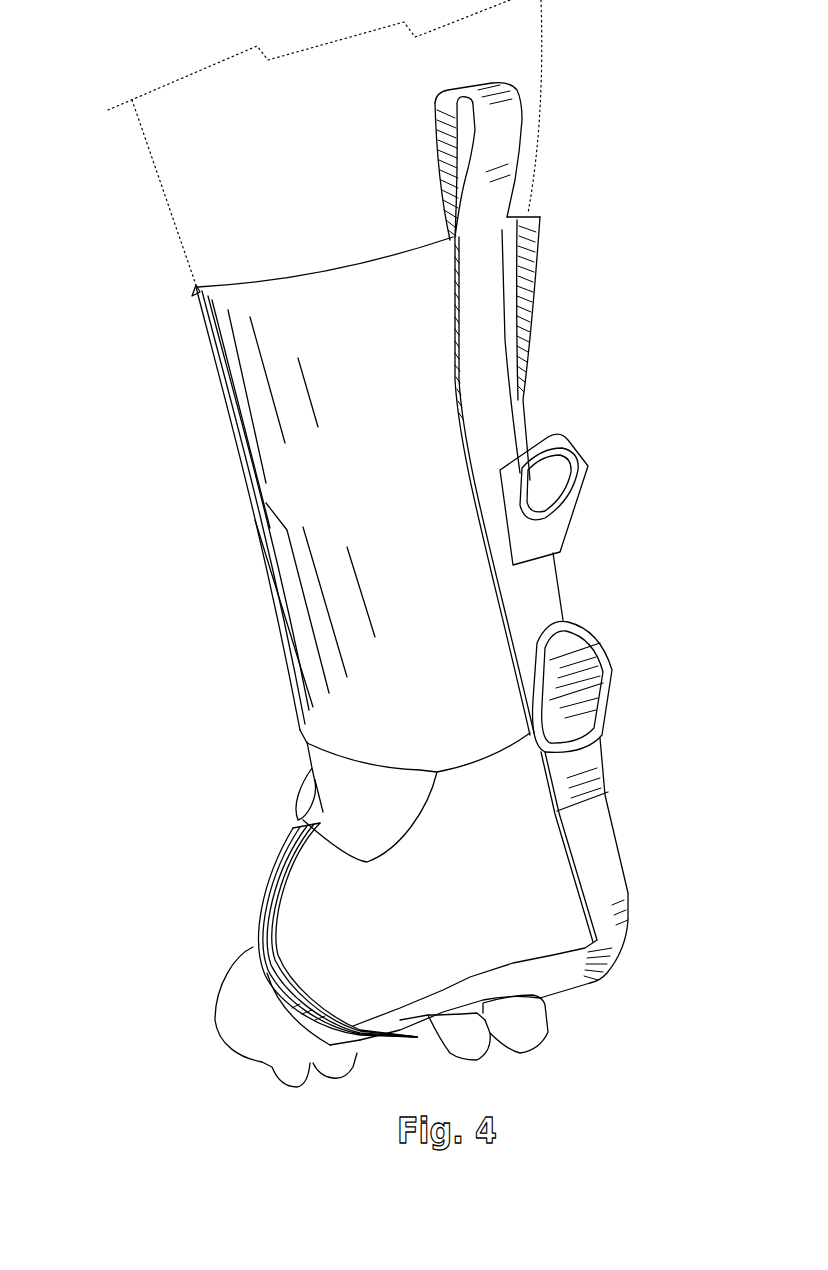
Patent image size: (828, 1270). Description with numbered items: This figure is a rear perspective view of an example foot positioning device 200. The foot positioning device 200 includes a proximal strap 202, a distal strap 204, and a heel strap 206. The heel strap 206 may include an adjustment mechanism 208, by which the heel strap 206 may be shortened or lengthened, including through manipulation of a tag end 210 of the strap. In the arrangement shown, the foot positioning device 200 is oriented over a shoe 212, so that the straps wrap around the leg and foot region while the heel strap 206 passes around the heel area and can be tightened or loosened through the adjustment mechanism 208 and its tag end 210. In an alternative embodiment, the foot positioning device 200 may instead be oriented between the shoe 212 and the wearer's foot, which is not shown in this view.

The foot positioning device 200 is at (371, 544).
The proximal strap 202 is at (318, 607).
The distal strap 204 is at (270, 967).
The heel strap 206 is at (597, 870).
The adjustment mechanism 208 is at (610, 675).
The tag end 210 is at (540, 533).
The shoe 212 is at (448, 930).